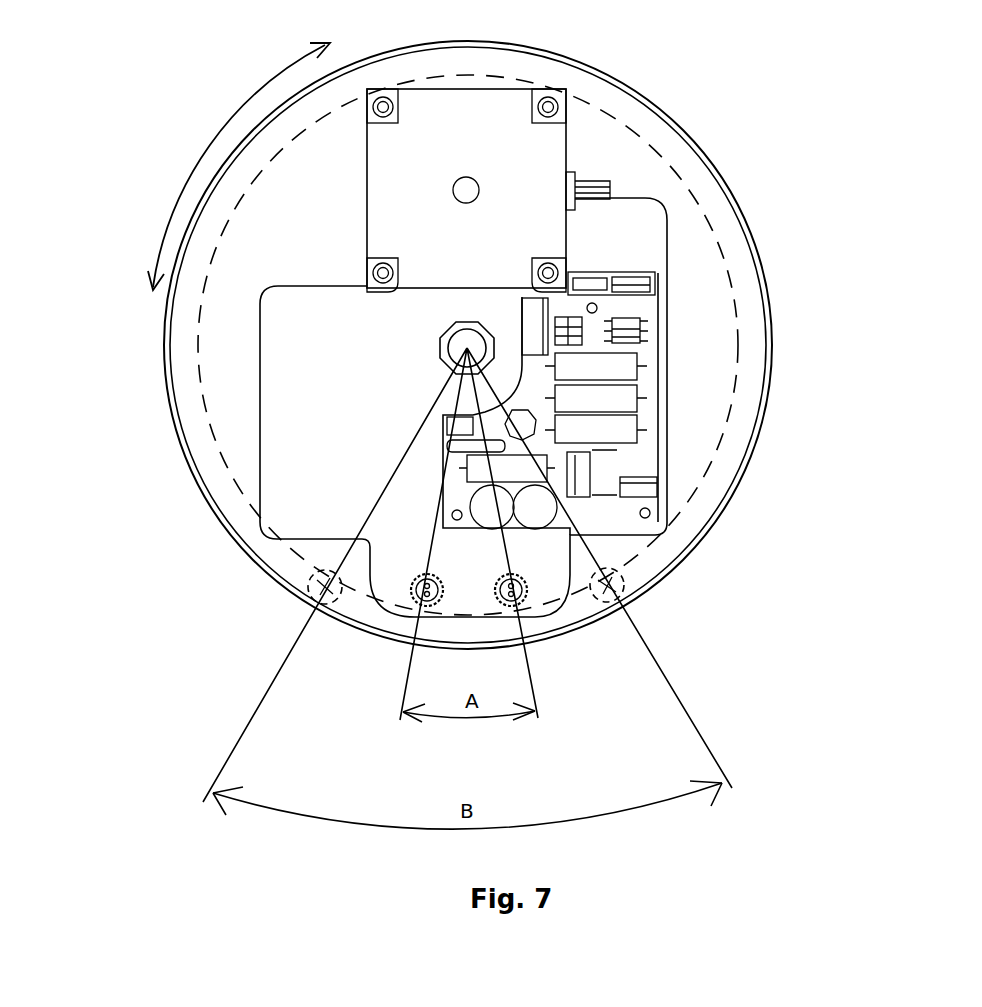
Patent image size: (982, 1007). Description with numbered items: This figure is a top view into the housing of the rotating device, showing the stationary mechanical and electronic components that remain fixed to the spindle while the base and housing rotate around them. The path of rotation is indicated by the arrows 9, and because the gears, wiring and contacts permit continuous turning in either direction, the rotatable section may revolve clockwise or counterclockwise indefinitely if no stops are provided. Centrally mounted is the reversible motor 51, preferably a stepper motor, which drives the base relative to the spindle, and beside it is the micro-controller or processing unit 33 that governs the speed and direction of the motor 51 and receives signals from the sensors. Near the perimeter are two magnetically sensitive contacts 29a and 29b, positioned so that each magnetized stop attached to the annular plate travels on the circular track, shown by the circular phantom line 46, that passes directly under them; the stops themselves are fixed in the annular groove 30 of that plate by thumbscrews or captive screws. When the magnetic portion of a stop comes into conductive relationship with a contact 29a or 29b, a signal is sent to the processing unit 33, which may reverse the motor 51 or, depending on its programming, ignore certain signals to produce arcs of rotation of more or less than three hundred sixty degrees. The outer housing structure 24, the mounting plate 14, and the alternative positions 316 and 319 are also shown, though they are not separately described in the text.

The arrows 9 is at (239, 166).
The mounting plate 14 is at (282, 505).
The housing 24 is at (190, 474).
The magnetically sensitive contact 29a is at (527, 593).
The magnetically sensitive contact 29b is at (417, 600).
The annular groove 30 is at (200, 392).
The processing unit 33 is at (645, 385).
The circular phantom line 46 is at (402, 345).
The reversible motor 51 is at (492, 113).
The alternative mounting position 316 is at (325, 590).
The alternative mounting position 319 is at (620, 583).